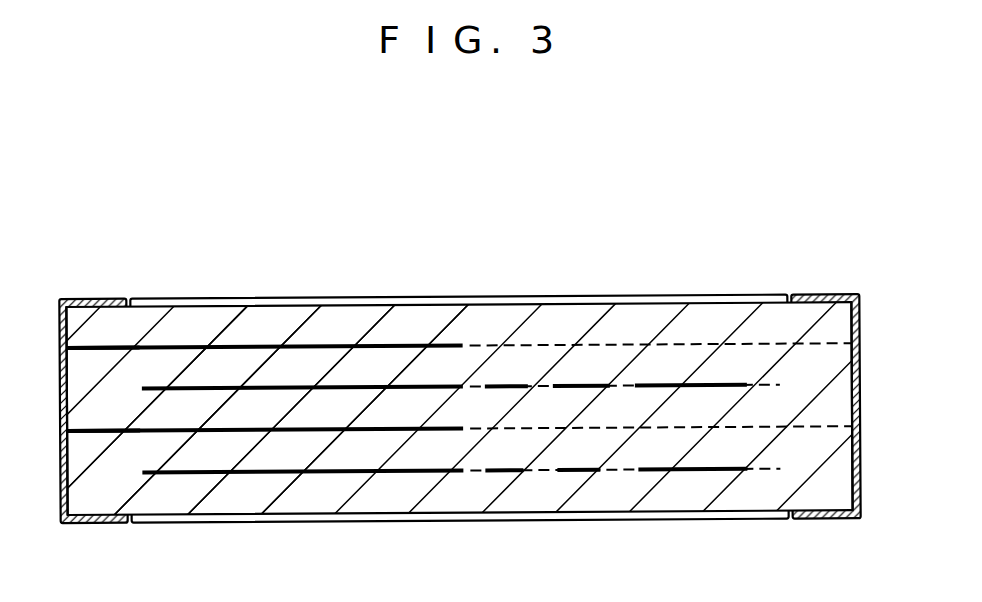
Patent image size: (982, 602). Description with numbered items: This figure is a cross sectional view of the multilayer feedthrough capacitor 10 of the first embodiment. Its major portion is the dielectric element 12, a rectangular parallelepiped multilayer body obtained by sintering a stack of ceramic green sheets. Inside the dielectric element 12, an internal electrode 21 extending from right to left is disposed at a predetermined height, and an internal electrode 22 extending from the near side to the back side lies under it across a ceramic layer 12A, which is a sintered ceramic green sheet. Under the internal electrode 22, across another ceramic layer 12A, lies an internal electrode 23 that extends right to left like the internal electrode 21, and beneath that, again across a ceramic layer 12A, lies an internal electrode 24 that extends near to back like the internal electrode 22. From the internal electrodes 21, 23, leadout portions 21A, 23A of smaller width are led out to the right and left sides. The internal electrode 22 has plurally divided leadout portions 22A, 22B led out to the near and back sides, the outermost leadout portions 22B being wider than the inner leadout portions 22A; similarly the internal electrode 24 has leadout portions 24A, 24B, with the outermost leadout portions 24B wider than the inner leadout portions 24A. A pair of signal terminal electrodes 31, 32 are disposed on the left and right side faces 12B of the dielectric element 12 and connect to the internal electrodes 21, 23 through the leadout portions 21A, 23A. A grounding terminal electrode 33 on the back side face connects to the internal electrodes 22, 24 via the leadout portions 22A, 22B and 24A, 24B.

The multilayer feedthrough capacitor 10 is at (614, 223).
The dielectric element 12 is at (834, 402).
The ceramic layer 12A is at (312, 330).
The side face 12B is at (60, 452).
The internal electrode 21 is at (343, 348).
The leadout portion 21A is at (96, 347).
The internal electrode 22 is at (369, 388).
The leadout portion 22A is at (582, 385).
The leadout portion 22B is at (700, 385).
The internal electrode 23 is at (380, 430).
The leadout portion 23A is at (92, 433).
The internal electrode 24 is at (417, 473).
The leadout portion 24A is at (577, 475).
The leadout portion 24B is at (683, 471).
The signal terminal electrode 31 is at (60, 332).
The signal terminal electrode 32 is at (860, 327).
The grounding terminal electrode 33 is at (449, 295).